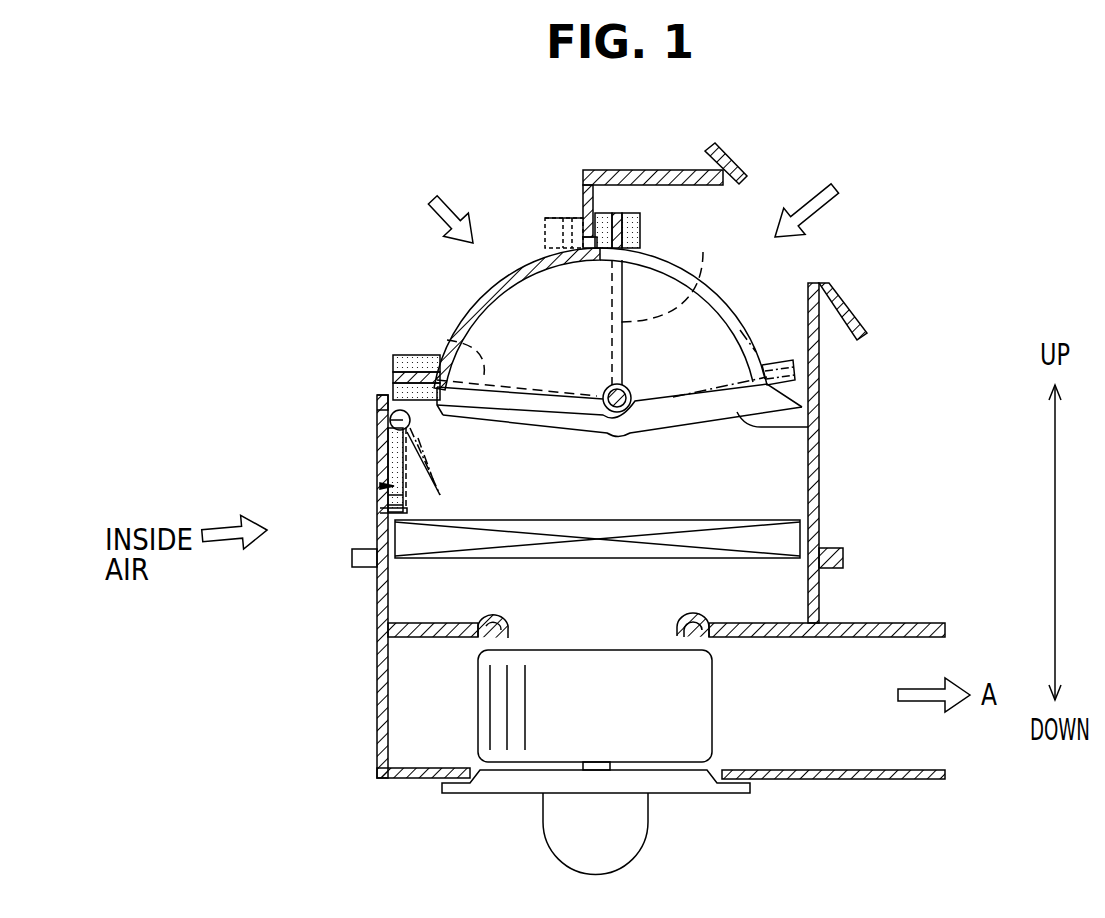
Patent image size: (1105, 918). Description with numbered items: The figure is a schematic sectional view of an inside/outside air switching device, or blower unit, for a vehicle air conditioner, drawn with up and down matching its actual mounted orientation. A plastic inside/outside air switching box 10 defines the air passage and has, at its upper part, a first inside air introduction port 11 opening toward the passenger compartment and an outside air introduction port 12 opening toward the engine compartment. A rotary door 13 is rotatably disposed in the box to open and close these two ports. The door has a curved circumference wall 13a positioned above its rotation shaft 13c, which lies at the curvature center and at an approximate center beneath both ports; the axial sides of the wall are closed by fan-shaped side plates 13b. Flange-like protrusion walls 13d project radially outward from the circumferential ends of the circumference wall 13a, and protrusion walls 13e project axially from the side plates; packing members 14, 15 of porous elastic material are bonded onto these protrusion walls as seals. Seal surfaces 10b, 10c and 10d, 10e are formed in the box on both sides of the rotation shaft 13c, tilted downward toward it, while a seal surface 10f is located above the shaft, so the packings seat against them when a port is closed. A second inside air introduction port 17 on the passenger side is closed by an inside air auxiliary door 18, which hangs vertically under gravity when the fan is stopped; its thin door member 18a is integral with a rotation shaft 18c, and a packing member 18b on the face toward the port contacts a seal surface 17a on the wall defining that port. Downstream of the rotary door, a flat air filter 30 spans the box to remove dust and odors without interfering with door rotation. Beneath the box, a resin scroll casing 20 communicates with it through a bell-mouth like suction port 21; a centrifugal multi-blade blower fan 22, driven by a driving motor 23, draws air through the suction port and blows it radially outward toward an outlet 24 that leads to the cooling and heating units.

The inside/outside air switching box 10 is at (824, 361).
The seal surface 10b is at (380, 400).
The seal surface 10c is at (377, 600).
The seal surface 10d is at (818, 407).
The seal surface 10e is at (808, 427).
The seal surface 10f is at (583, 205).
The first inside air introduction port 11 is at (463, 273).
The outside air introduction port 12 is at (763, 200).
The rotary door 13 is at (551, 271).
The circumference wall 13a is at (503, 273).
The side plate 13b is at (540, 297).
The rotation shaft 13c is at (607, 390).
The protrusion wall 13d is at (617, 216).
The protrusion wall 13e is at (330, 323).
The packing member 14 is at (604, 215).
The packing member 15 is at (640, 222).
The second inside air introduction port 17 is at (386, 475).
The seal surface 17a is at (390, 452).
The inside air auxiliary door 18 is at (380, 493).
The door member 18a is at (377, 513).
The packing member 18b is at (377, 503).
The rotation shaft 18c is at (391, 421).
The scroll casing 20 is at (492, 762).
The suction port 21 is at (545, 632).
The blower fan 22 is at (495, 728).
The driving motor 23 is at (635, 826).
The outlet 24 is at (848, 665).
The air filter 30 is at (785, 538).